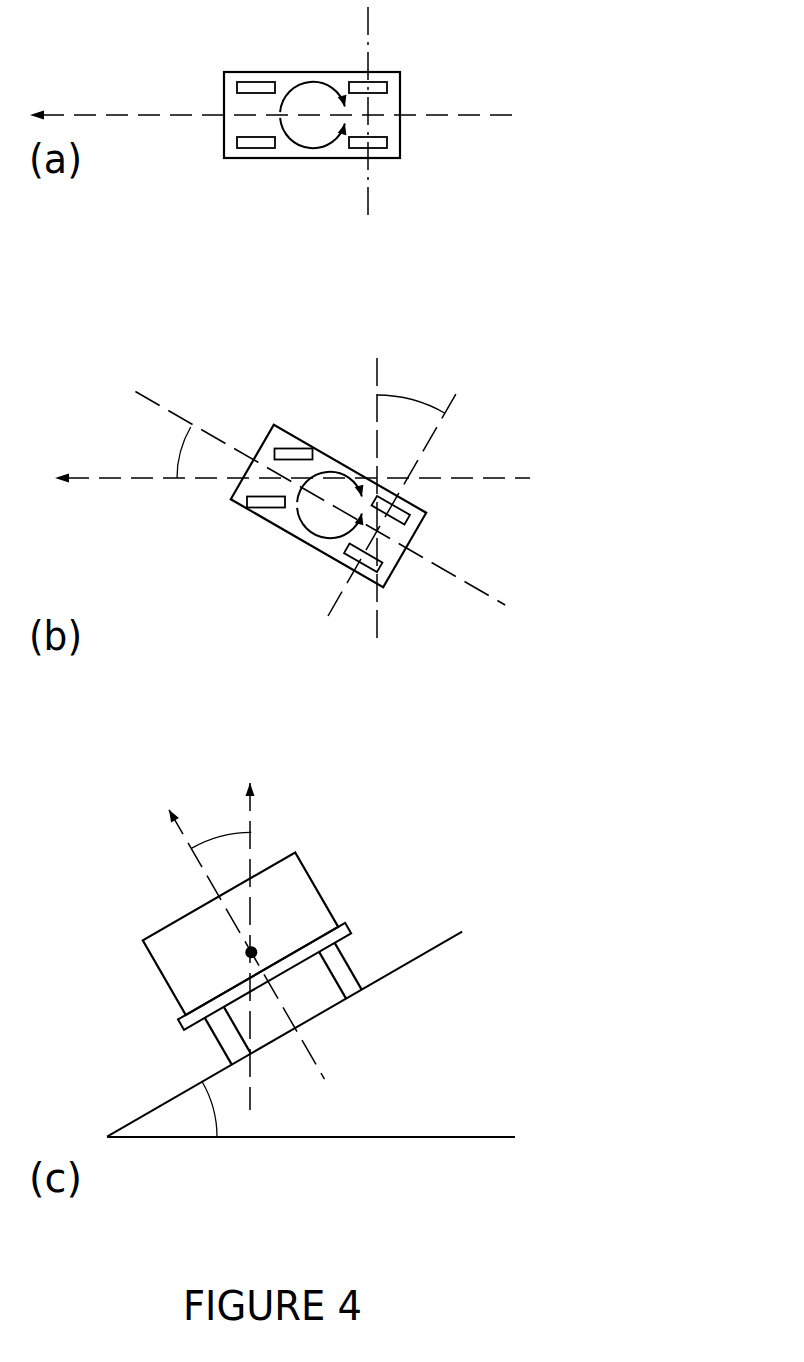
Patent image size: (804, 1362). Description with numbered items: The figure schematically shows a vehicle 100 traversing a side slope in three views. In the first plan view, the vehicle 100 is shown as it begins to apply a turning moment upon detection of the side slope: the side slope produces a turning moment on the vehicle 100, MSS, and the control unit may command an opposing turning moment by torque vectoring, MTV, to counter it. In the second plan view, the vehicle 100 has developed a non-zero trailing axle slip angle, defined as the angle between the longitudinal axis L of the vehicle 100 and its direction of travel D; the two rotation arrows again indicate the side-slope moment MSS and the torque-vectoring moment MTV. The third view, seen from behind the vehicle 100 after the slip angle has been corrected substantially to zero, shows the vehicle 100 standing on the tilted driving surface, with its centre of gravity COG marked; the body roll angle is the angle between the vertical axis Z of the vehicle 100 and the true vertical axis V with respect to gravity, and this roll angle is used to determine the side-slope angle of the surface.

The vehicle 100 is at (400, 83).
The turning moment due to the side slope MSS is at (310, 82).
The turning moment by torque vectoring MTV is at (310, 147).
The direction of travel D is at (58, 485).
The longitudinal axis L is at (477, 590).
The true vertical axis V is at (252, 818).
The vertical axis of vehicle Z is at (205, 877).
The center of gravity COG is at (247, 955).